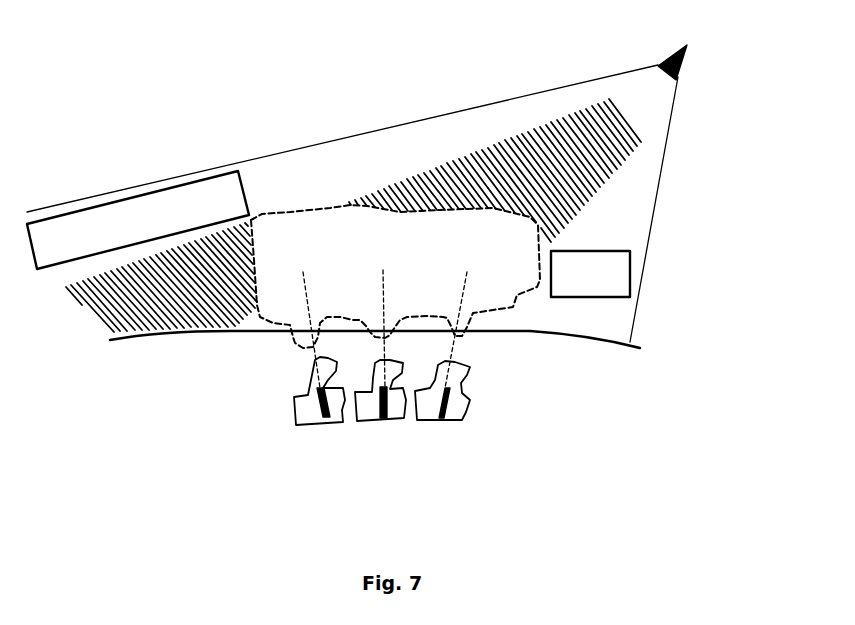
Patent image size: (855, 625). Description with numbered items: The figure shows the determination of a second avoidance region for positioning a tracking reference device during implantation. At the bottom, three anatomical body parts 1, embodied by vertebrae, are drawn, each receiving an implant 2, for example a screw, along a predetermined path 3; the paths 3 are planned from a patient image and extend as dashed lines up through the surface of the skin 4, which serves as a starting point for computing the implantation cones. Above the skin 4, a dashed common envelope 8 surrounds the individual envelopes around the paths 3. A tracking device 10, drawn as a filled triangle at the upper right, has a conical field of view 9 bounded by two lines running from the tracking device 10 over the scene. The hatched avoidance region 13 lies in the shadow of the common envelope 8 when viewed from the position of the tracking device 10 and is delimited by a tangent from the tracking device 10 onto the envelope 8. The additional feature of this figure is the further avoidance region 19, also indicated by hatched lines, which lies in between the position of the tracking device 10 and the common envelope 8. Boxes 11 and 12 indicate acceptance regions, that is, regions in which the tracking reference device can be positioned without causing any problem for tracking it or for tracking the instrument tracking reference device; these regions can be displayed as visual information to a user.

The anatomical body part 1 is at (308, 410).
The implant 2 is at (328, 418).
The path 3 is at (313, 348).
The skin 4 is at (602, 342).
The common envelope 8 is at (513, 307).
The conical field of view 9 is at (487, 103).
The tracking device 10 is at (682, 63).
The box 11 is at (187, 205).
The box 12 is at (603, 281).
The avoidance region 13 is at (153, 310).
The further avoidance region 19 is at (613, 168).